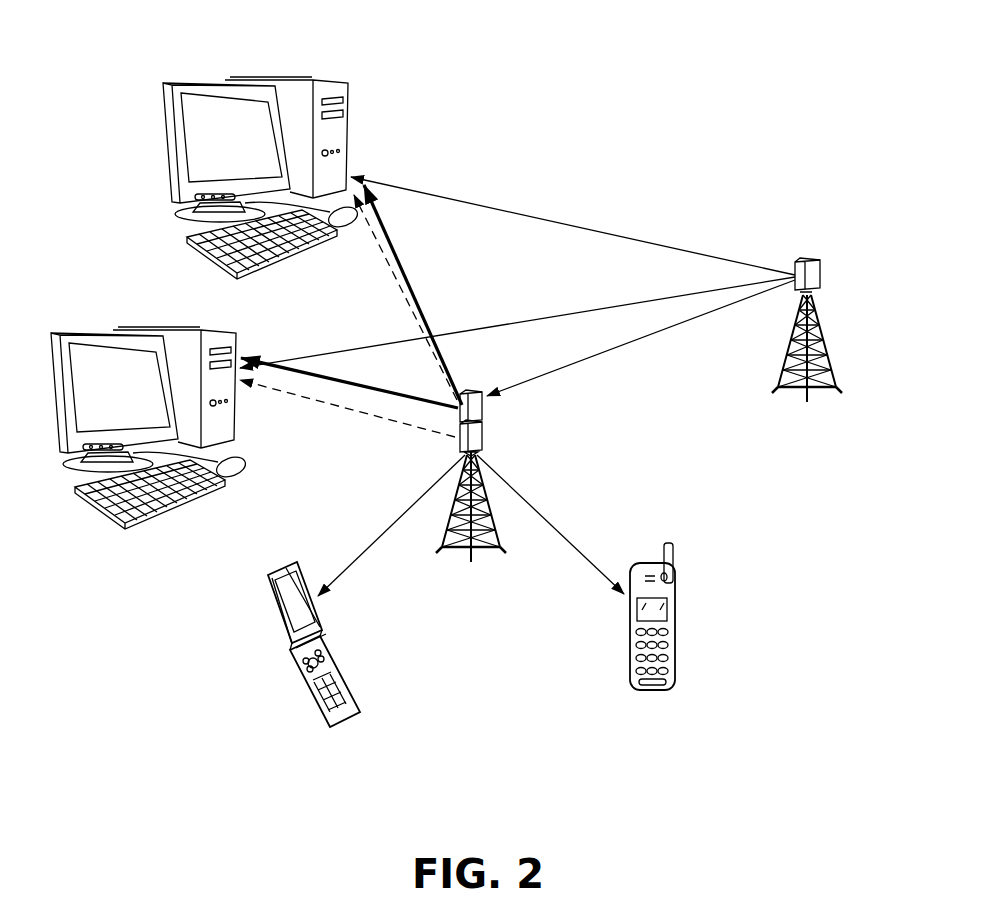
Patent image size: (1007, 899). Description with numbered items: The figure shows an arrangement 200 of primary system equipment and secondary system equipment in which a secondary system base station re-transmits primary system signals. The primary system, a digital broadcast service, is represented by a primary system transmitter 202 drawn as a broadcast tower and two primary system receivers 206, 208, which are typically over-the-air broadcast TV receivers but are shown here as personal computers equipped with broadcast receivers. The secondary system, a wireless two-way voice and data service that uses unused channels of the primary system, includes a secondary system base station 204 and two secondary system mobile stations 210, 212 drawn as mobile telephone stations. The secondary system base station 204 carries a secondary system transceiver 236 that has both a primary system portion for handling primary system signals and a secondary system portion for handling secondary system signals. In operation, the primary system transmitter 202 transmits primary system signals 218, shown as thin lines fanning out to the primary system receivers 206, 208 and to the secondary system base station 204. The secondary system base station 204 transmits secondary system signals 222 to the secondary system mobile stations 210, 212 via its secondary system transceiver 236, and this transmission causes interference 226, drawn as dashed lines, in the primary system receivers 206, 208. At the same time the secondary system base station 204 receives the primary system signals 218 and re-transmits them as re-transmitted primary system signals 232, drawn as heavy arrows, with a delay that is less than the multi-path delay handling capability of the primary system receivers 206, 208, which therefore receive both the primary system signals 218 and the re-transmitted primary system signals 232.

The arrangement 200 is at (654, 49).
The primary system transmitter 202 is at (828, 385).
The secondary system base station 204 is at (490, 545).
The primary system receiver 206 is at (285, 78).
The primary system receiver 208 is at (166, 330).
The secondary system mobile station 210 is at (270, 590).
The secondary system mobile station 212 is at (676, 562).
The primary system signals 218 is at (679, 323).
The secondary system signals 222 is at (405, 510).
The interference 226 is at (405, 310).
The re-transmitted primary system signals 232 is at (406, 280).
The secondary system transceiver 236 is at (482, 406).